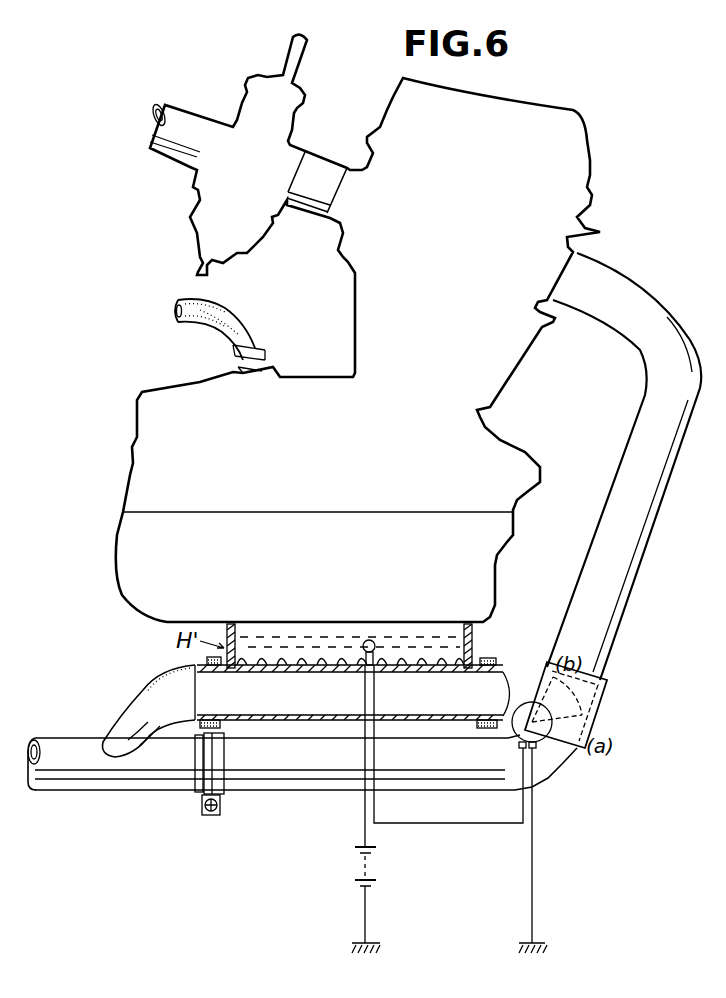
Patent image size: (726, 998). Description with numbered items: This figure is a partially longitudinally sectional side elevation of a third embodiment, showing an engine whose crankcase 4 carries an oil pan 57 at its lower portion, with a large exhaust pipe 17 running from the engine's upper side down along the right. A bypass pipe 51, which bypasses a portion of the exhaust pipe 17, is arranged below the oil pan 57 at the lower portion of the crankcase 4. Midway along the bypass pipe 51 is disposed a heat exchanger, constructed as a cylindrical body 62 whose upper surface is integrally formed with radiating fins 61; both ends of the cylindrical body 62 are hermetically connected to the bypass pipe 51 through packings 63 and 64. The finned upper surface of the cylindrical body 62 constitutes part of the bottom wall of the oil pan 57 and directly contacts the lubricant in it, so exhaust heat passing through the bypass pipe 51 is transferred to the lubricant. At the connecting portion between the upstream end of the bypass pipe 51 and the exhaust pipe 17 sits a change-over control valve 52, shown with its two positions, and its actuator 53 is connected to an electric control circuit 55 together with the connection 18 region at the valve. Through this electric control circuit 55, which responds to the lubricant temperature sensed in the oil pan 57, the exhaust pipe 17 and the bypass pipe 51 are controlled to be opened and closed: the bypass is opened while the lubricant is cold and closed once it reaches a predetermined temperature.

The crankcase 4 is at (325, 509).
The exhaust pipe 17 is at (655, 537).
The exhaust passage connection 18 is at (524, 670).
The bypass pipe 51 is at (124, 703).
The change-over control valve 52 is at (591, 704).
The actuator 53 is at (302, 774).
The electric control circuit 55 is at (359, 815).
The oil pan 57 is at (474, 645).
The radiating fins 61 is at (318, 660).
The cylindrical body 62 is at (316, 720).
The packing 63 is at (213, 718).
The packing 64 is at (480, 718).